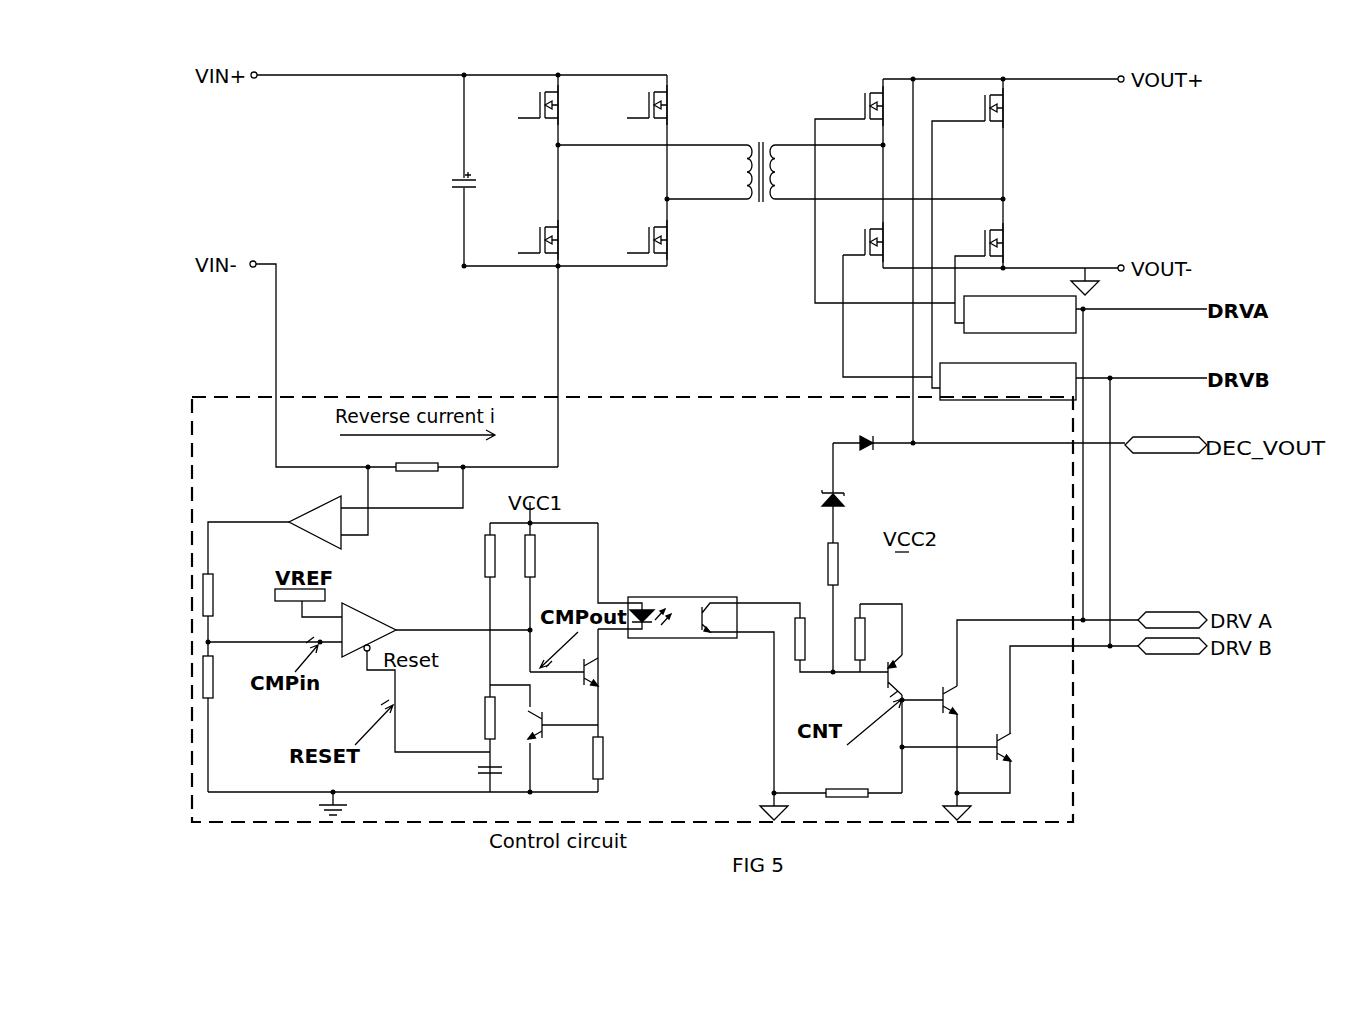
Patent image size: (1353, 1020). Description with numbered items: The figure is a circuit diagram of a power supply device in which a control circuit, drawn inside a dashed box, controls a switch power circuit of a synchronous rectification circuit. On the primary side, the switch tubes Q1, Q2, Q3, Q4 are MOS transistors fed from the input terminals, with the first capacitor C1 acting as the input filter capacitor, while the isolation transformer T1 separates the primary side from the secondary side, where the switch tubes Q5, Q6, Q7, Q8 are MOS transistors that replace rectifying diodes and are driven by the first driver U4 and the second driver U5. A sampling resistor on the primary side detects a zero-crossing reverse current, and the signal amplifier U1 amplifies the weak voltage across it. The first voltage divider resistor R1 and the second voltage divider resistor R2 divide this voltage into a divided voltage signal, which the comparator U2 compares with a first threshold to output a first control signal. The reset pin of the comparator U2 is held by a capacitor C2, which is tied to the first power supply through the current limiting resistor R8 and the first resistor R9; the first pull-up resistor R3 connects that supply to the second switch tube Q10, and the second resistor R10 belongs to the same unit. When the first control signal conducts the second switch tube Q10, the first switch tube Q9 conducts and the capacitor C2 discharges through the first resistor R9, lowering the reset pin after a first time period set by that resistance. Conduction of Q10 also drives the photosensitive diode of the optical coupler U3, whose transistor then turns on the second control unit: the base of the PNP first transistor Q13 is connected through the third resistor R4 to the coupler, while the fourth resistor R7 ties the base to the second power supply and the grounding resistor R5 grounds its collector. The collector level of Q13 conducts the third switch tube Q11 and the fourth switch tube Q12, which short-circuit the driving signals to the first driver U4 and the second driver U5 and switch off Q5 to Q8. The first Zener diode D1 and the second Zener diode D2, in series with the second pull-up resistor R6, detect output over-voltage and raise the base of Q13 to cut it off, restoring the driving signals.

The switch tube Q1 is at (556, 105).
The switch tube Q2 is at (556, 240).
The switch tube Q3 is at (663, 105).
The switch tube Q4 is at (665, 240).
The switch tube Q5 is at (885, 194).
The switch tube Q6 is at (887, 299).
The switch tube Q7 is at (984, 238).
The switch tube Q8 is at (995, 273).
The first switch tube Q9 is at (563, 718).
The second switch tube Q10 is at (587, 672).
The third switch tube Q11 is at (1020, 706).
The fourth switch tube Q12 is at (1020, 719).
The first transistor Q13 is at (918, 675).
The first capacitor C1 is at (479, 183).
The capacitor C2 is at (504, 770).
The isolation transformer T1 is at (761, 160).
The first voltage divider resistor R1 is at (222, 595).
The second voltage divider resistor R2 is at (222, 677).
The first pull-up resistor R3 is at (544, 556).
The third resistor R4 is at (814, 639).
The grounding resistor R5 is at (847, 781).
The second pull-up resistor R6 is at (847, 607).
The fourth resistor R7 is at (874, 639).
The current limiting resistor R8 is at (504, 556).
The first resistor R9 is at (504, 716).
The second resistor R10 is at (618, 758).
The signal amplifier U1 is at (316, 519).
The comparator U2 is at (369, 626).
The optical coupler U3 is at (682, 602).
The first driver U4 is at (1020, 301).
The second driver U5 is at (1008, 368).
The first Zener diode D1 is at (979, 464).
The second Zener diode D2 is at (851, 516).